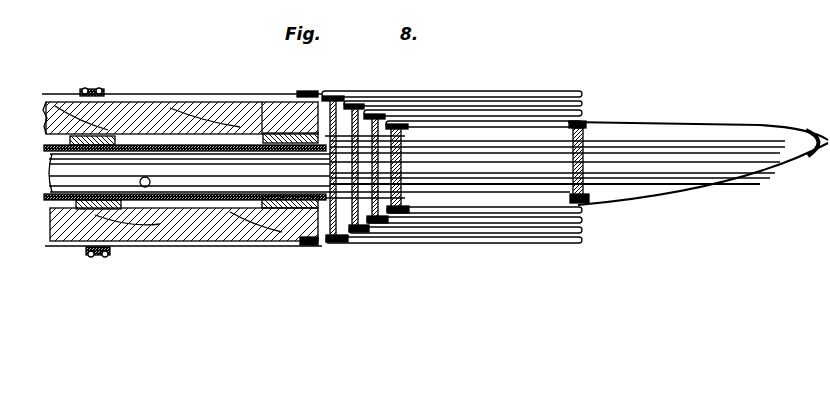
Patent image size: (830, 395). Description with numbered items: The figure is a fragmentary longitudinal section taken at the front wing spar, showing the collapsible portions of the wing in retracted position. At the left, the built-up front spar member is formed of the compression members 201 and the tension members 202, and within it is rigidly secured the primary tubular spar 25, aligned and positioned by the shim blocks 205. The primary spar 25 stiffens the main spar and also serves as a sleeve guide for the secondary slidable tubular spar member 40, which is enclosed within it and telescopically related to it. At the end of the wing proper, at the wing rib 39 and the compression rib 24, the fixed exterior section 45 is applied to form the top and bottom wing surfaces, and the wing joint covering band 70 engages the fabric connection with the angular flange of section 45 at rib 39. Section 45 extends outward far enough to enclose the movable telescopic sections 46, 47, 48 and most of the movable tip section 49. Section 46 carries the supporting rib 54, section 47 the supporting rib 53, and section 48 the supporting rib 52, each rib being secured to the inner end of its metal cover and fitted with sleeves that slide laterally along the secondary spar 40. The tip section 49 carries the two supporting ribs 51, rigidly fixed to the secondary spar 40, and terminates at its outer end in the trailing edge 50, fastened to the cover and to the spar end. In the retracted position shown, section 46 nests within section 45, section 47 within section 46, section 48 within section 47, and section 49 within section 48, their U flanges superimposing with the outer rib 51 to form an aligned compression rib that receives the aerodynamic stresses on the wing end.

The wing joint covering band 70 is at (89, 89).
The shim blocks 205 is at (107, 138).
The compression members 201 is at (173, 113).
The tension members 202 is at (232, 212).
The primary tubular spar 25 is at (110, 187).
The wing rib 39 is at (110, 254).
The compression rib 24 is at (316, 245).
The supporting rib 54 is at (345, 237).
The supporting rib 53 is at (365, 224).
The supporting rib 52 is at (380, 214).
The supporting ribs 51 is at (405, 198).
The fixed exterior section 45 is at (428, 91).
The movable telescopic section 46 is at (462, 101).
The movable telescopic section 47 is at (500, 110).
The movable telescopic section 48 is at (540, 121).
The movable tip section 49 is at (662, 122).
The trailing edge 50 is at (812, 130).
The secondary slidable tubular spar member 40 is at (640, 160).